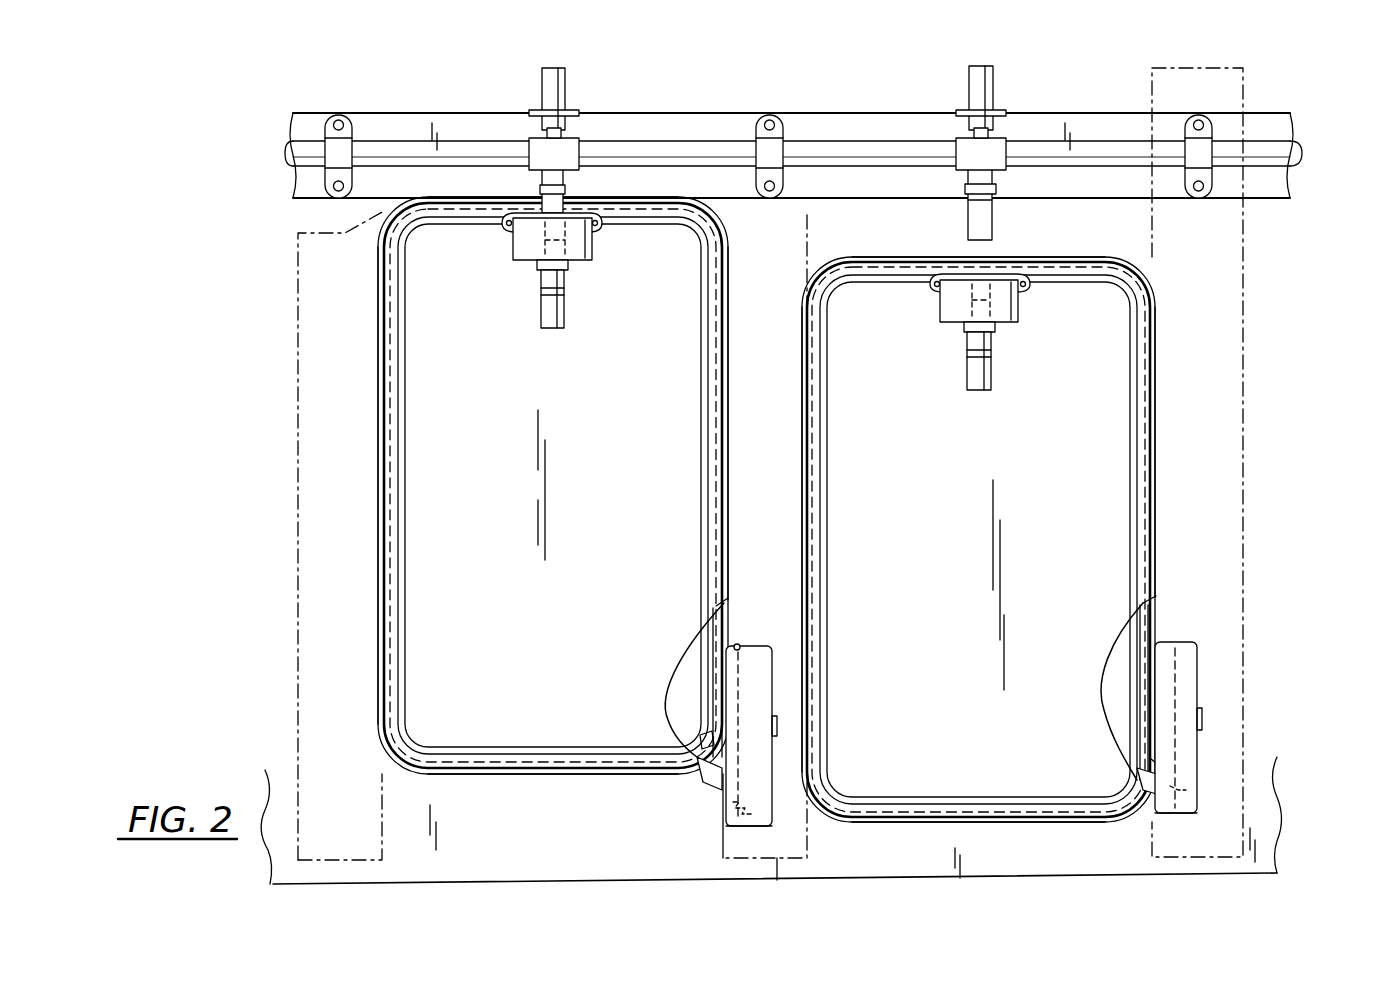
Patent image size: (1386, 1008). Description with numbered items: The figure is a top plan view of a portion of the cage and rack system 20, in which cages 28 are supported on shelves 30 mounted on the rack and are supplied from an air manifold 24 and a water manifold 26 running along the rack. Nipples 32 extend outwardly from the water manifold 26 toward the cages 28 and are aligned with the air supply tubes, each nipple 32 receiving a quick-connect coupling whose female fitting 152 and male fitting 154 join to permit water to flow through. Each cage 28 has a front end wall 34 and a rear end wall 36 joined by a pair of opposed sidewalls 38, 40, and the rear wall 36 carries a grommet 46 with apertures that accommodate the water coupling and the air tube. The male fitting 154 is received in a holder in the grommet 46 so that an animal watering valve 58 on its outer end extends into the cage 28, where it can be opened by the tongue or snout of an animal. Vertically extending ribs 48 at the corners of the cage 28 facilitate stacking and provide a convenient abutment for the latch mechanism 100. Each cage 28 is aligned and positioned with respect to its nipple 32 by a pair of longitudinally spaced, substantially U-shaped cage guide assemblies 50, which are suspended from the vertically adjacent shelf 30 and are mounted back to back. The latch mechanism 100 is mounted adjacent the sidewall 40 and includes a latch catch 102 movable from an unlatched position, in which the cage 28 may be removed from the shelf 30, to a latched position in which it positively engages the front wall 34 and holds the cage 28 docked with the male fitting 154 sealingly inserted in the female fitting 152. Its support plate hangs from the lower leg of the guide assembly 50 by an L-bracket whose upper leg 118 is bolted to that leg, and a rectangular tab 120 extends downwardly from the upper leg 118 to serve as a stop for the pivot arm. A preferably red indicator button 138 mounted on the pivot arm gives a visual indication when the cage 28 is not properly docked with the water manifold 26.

The cage and rack system 20 is at (826, 60).
The air manifold 24 is at (819, 130).
The water manifold 26 is at (1270, 148).
The cage 28 is at (412, 622).
The shelf 30 is at (965, 876).
The nipple 32 is at (578, 165).
The front end wall 34 is at (515, 776).
The rear end wall 36 is at (441, 197).
The sidewall 38 is at (378, 474).
The sidewall 40 is at (730, 512).
The grommet 46 is at (593, 247).
The rib 48 is at (700, 737).
The cage guide assembly 50 is at (298, 521).
The animal watering valve 58 is at (566, 320).
The latch mechanism 100 is at (760, 645).
The latch catch 102 is at (700, 782).
The upper leg 118 is at (772, 826).
The rectangular tab 120 is at (778, 720).
The indicator button 138 is at (742, 815).
The female fitting 152 is at (543, 193).
The male fitting 154 is at (535, 250).